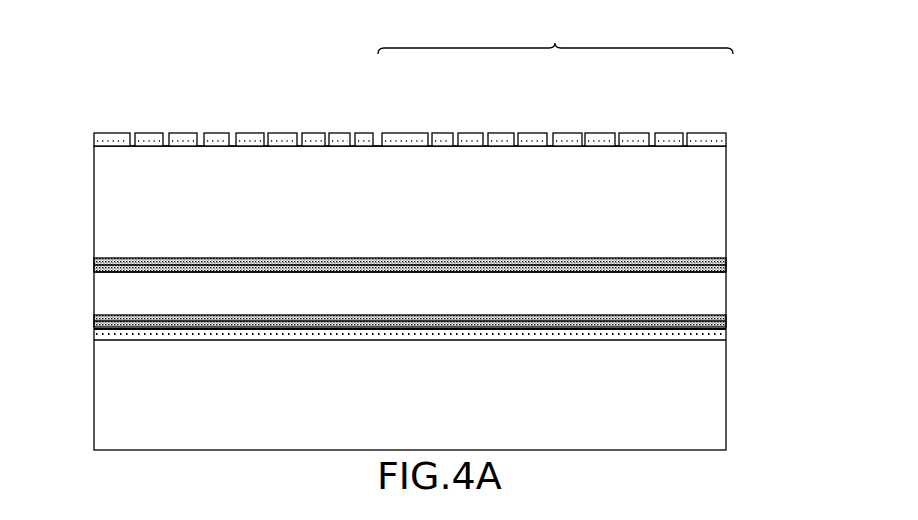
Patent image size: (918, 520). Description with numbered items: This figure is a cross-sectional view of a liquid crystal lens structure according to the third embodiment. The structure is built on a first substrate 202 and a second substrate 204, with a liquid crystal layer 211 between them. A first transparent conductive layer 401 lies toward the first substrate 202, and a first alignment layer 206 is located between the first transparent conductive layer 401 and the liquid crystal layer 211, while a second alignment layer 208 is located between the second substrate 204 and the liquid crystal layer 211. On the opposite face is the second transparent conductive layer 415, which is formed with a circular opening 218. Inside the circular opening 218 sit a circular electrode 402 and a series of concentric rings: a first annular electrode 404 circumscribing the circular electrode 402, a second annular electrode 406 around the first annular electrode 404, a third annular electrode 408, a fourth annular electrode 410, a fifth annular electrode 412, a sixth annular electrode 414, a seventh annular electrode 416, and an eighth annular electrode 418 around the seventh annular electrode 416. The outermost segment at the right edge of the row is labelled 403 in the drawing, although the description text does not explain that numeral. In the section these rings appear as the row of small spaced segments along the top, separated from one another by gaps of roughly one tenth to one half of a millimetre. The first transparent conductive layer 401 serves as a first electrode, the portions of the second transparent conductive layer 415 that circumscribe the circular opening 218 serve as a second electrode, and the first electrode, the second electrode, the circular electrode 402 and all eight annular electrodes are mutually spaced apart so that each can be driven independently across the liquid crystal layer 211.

The first substrate 202 is at (708, 392).
The second substrate 204 is at (708, 209).
The first alignment layer 206 is at (710, 322).
The second alignment layer 208 is at (715, 264).
The liquid crystal layer 211 is at (708, 295).
The circular opening 218 is at (133, 133).
The first transparent conductive layer 401 is at (98, 335).
The circular electrode 402 is at (384, 133).
The last electrode 403 is at (720, 133).
The first annular electrode 404 is at (432, 133).
The second annular electrode 406 is at (462, 133).
The third annular electrode 408 is at (496, 133).
The fourth annular electrode 410 is at (530, 133).
The fifth annular electrode 412 is at (563, 133).
The sixth annular electrode 414 is at (600, 133).
The second transparent conductive layer 415 is at (555, 81).
The seventh annular electrode 416 is at (640, 133).
The eighth annular electrode 418 is at (680, 133).